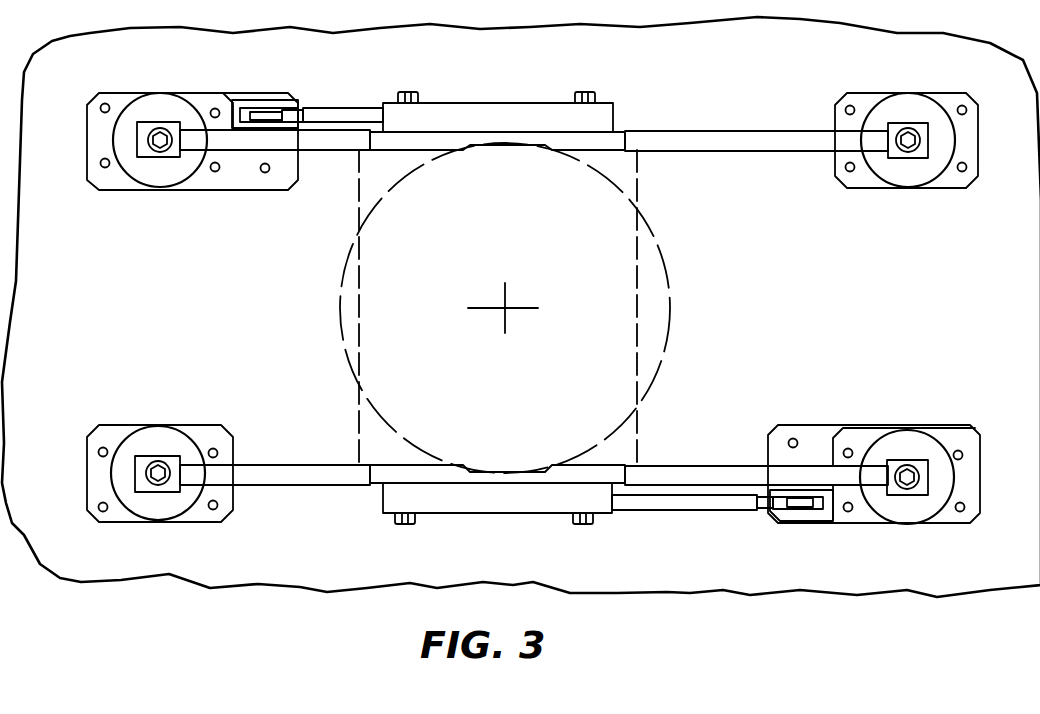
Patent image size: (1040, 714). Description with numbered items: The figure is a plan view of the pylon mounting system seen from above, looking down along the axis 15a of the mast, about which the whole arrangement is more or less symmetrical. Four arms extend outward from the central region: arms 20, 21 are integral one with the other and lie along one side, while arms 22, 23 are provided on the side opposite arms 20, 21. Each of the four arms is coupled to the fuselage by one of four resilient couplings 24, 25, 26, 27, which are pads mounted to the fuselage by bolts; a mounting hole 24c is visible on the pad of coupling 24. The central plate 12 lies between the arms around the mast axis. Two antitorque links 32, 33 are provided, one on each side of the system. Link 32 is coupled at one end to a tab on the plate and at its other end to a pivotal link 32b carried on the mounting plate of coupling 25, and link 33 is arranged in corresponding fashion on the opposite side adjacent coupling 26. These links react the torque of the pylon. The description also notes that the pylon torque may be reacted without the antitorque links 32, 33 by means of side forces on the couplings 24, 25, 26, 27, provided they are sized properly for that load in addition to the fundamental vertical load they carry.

The workpiece 12 is at (566, 389).
The axis of the mast 15a is at (505, 308).
The arm 20 is at (289, 472).
The arm 21 is at (696, 472).
The arm 22 is at (344, 139).
The arm 23 is at (730, 138).
The resilient coupling 24 is at (136, 505).
The mounting hole 24c is at (217, 507).
The resilient coupling 25 is at (905, 508).
The resilient coupling 26 is at (144, 108).
The resilient coupling 27 is at (920, 109).
The antitorque link 32 is at (693, 510).
The pivotal link 32b is at (801, 522).
The antitorque link 33 is at (338, 118).